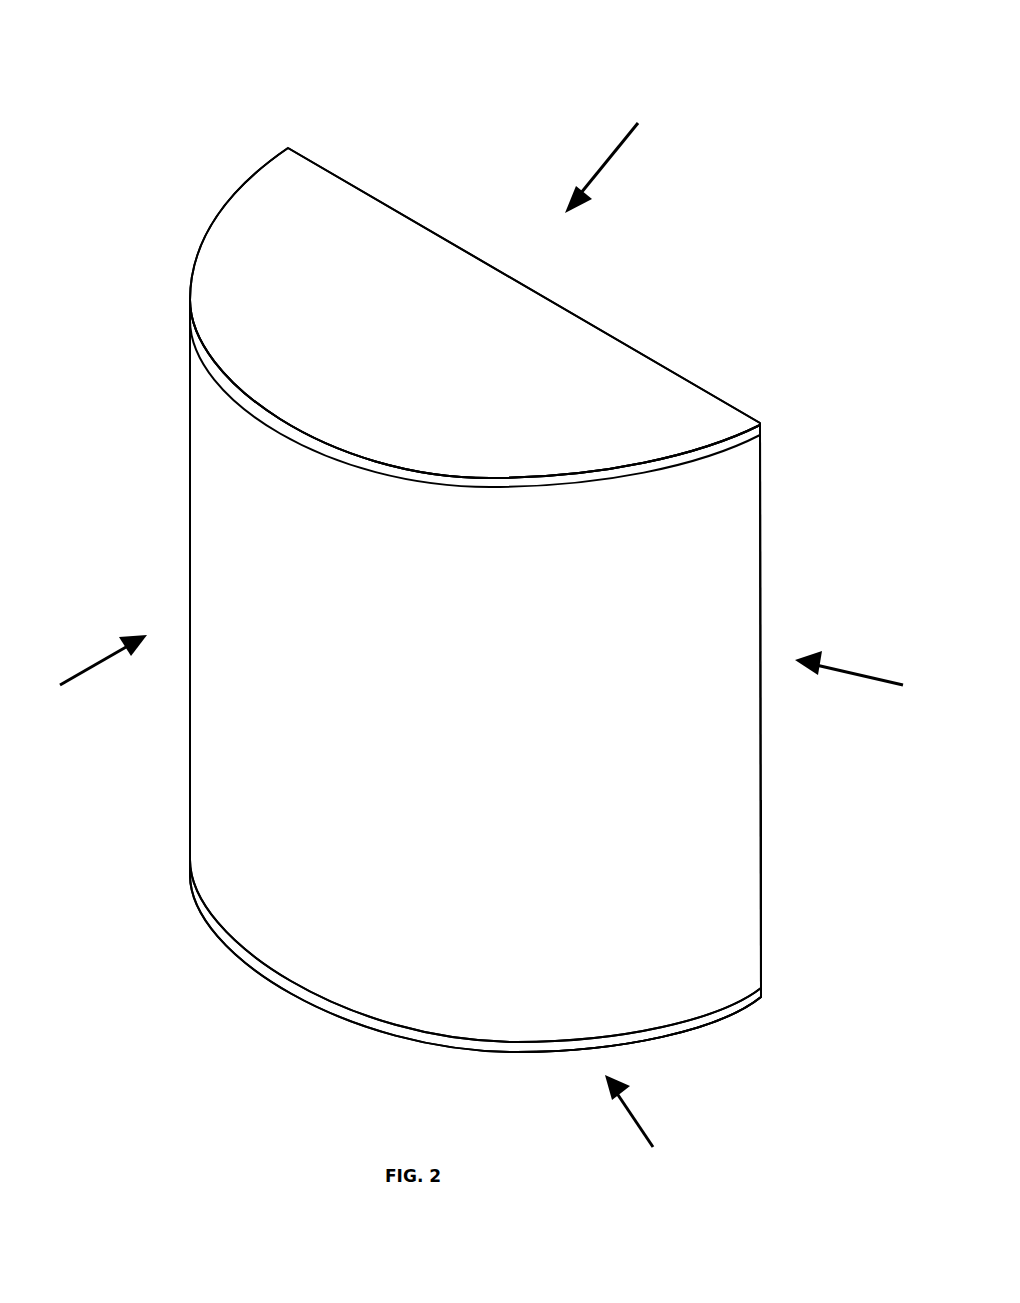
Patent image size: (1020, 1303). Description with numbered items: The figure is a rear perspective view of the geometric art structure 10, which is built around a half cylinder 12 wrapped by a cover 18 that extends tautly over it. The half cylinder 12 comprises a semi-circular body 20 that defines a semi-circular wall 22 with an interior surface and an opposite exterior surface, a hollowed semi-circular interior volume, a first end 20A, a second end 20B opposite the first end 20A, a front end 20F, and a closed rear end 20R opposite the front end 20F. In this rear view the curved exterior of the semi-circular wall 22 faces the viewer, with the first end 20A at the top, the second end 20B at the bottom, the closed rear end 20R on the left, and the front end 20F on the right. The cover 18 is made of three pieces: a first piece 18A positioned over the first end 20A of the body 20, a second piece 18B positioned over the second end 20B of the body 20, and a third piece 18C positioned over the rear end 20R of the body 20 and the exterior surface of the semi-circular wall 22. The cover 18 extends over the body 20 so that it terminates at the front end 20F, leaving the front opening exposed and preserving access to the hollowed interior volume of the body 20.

The geometric art structure 10 is at (747, 148).
The half cylinder 12 is at (762, 718).
The cover 18 is at (426, 551).
The first piece 18A is at (352, 208).
The second piece 18B is at (277, 987).
The third piece 18C is at (217, 448).
The semi-circular body 20 is at (190, 548).
The first end 20A is at (621, 167).
The second end 20B is at (641, 1124).
The closed rear end 20R is at (82, 672).
The front end 20F is at (865, 674).
The semi-circular wall 22 is at (762, 848).